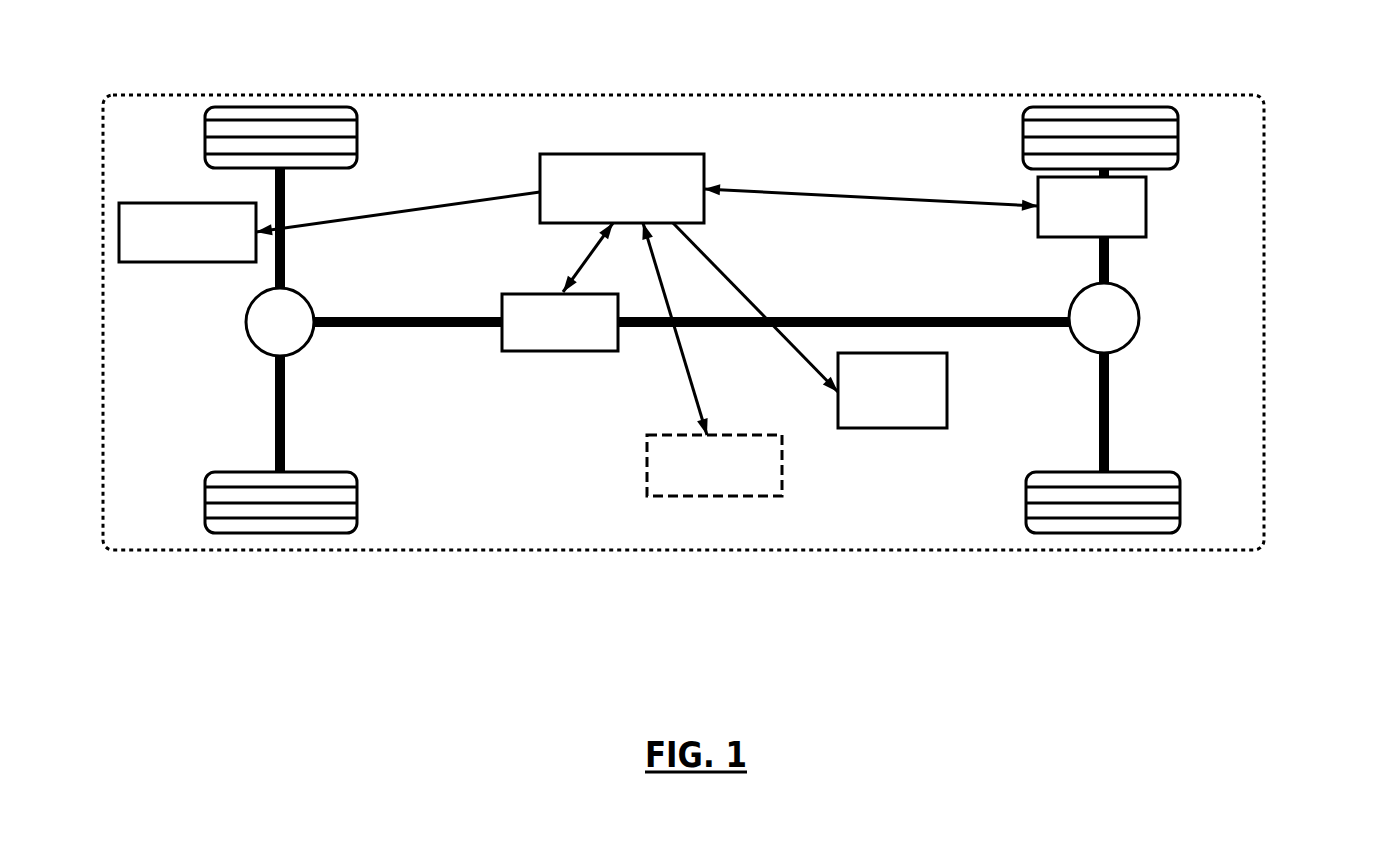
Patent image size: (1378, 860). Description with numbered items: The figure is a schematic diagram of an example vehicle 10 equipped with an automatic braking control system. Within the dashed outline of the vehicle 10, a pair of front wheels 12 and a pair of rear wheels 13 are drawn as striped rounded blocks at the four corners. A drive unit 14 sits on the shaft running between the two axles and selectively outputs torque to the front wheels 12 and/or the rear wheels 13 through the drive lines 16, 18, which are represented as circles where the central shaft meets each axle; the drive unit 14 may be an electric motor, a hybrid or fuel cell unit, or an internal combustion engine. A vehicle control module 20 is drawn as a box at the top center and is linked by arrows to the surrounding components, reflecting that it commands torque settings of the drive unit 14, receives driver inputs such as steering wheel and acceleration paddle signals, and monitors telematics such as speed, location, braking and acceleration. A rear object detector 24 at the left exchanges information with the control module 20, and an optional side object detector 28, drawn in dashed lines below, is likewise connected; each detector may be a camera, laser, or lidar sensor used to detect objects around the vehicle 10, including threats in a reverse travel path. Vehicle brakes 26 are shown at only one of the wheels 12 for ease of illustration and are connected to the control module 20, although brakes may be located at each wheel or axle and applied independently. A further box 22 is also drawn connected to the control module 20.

The vehicle 10 is at (1325, 59).
The front wheels 12 is at (1080, 107).
The rear wheels 13 is at (252, 107).
The drive unit 14 is at (515, 351).
The drive line 16 is at (1140, 318).
The drive line 18 is at (252, 340).
The vehicle control module 20 is at (621, 154).
The battery 22 is at (947, 389).
The rear object detector 24 is at (120, 262).
The vehicle brakes 26 is at (1040, 226).
The side object detector 28 is at (782, 460).